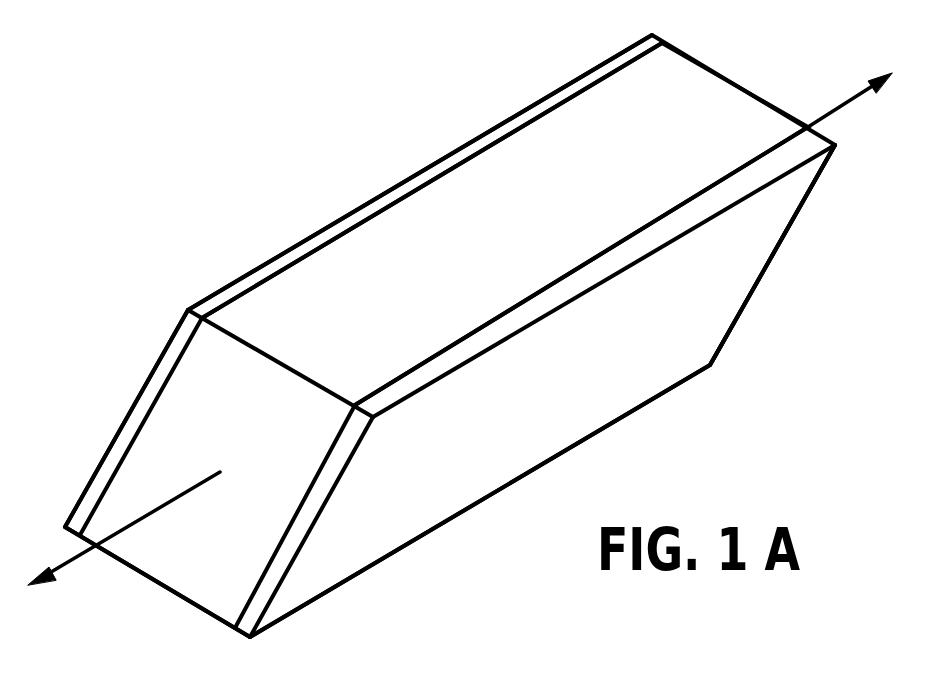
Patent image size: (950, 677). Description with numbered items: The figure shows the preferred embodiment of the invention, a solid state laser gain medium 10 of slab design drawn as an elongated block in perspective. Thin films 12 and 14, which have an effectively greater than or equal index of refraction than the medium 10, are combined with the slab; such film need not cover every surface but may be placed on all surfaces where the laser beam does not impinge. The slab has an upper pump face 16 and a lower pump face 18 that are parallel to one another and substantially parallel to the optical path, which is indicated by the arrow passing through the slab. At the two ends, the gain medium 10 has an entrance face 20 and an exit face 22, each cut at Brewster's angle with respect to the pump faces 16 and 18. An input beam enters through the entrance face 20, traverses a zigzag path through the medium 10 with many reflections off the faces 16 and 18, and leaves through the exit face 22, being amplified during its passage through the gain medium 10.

The solid state laser gain medium 10 is at (412, 321).
The thin film 12 is at (425, 176).
The thin film 14 is at (595, 272).
The upper pump face 16 is at (505, 224).
The lower pump face 18 is at (385, 520).
The entrance face 20 is at (219, 481).
The exit face 22 is at (722, 272).